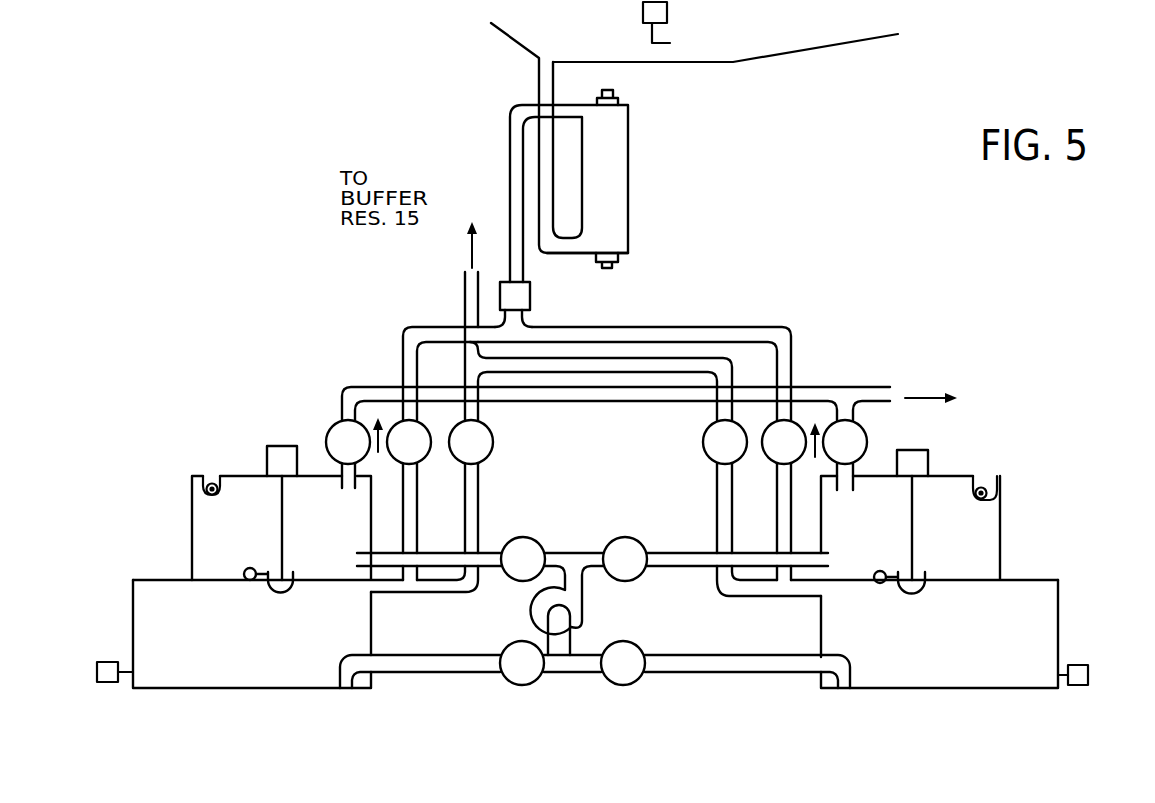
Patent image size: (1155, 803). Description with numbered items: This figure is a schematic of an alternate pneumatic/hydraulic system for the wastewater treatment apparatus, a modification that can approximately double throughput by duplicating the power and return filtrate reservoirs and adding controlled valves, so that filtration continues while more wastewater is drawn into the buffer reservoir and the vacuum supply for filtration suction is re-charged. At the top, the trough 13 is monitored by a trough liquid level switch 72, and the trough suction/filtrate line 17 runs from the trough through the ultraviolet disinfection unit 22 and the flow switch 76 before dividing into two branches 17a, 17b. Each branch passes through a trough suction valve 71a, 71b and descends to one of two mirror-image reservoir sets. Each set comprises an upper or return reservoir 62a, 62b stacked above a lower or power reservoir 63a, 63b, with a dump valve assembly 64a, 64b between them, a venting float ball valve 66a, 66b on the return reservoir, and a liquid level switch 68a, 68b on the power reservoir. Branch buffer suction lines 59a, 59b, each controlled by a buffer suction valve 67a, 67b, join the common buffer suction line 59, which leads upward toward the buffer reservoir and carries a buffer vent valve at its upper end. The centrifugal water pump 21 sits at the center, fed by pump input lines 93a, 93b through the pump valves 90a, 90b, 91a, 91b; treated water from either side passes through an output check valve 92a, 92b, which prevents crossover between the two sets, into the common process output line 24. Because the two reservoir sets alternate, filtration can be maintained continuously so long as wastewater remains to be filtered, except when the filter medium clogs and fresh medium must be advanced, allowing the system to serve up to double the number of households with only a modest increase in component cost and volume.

The trough 13 is at (833, 48).
The trough suction/filtrate line 17 is at (548, 70).
The branch of trough suction/filtrate line 17a is at (403, 347).
The branch of trough suction/filtrate line 17b is at (779, 335).
The centrifugal water pump 21 is at (541, 601).
The ultraviolet disinfection unit 22 is at (623, 183).
The common process output line 24 is at (818, 393).
The common buffer suction line 59 is at (467, 303).
The branch buffer suction line 59a is at (474, 482).
The branch buffer suction line 59b is at (718, 484).
The upper or return reservoir 62a is at (202, 539).
The upper or return reservoir 62b is at (1000, 527).
The lower or power reservoir 63a is at (372, 616).
The lower or power reservoir 63b is at (910, 634).
The dump valve assembly 64a is at (283, 534).
The dump valve assembly 64b is at (912, 532).
The venting float ball valve 66a is at (205, 486).
The venting float ball valve 66b is at (990, 490).
The buffer suction valve 67a is at (488, 437).
The buffer suction valve 67b is at (705, 440).
The liquid level switch 68a is at (120, 684).
The liquid level switch 68b is at (1073, 688).
The trough suction valve 71a is at (420, 465).
The trough suction valve 71b is at (777, 452).
The trough liquid level switch 72 is at (643, 13).
The flow switch 76 is at (530, 293).
The pump valve 90a is at (522, 531).
The pump valve 90b is at (614, 531).
The pump valve 91a is at (527, 686).
The pump valve 91b is at (624, 686).
The output check valve 92a is at (336, 426).
The output check valve 92b is at (861, 428).
The pump input line 93a is at (500, 694).
The pump input line 93b is at (717, 665).